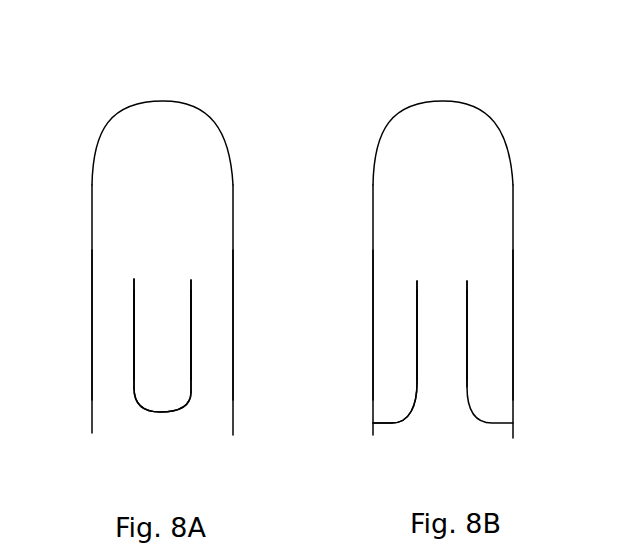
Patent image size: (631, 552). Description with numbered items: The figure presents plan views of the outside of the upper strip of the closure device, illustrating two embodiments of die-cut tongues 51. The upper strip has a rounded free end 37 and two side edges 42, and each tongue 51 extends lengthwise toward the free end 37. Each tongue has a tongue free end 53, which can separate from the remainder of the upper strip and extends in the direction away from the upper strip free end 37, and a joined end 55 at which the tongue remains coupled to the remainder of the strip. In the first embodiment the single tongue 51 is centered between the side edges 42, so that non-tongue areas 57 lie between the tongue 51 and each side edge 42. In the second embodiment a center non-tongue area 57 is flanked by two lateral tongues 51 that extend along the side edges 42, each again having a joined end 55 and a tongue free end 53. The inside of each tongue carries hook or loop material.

In FIG. 8A, the free end 37 is at (157, 101).
In FIG. 8B, the free end 37 is at (440, 101).
In FIG. 8A, the side edges 42 is at (92, 345).
In FIG. 8B, the side edges 42 is at (373, 345).
In FIG. 8A, the tongue 51 is at (157, 361).
In FIG. 8B, the tongue 51 is at (395, 377).
In FIG. 8A, the tongue free end 53 is at (163, 412).
In FIG. 8B, the tongue free end 53 is at (393, 423).
In FIG. 8A, the joined end 55 is at (163, 291).
In FIG. 8B, the joined end 55 is at (398, 283).
In FIG. 8A, the non-tongue area 57 is at (117, 317).
In FIG. 8B, the non-tongue area 57 is at (443, 357).